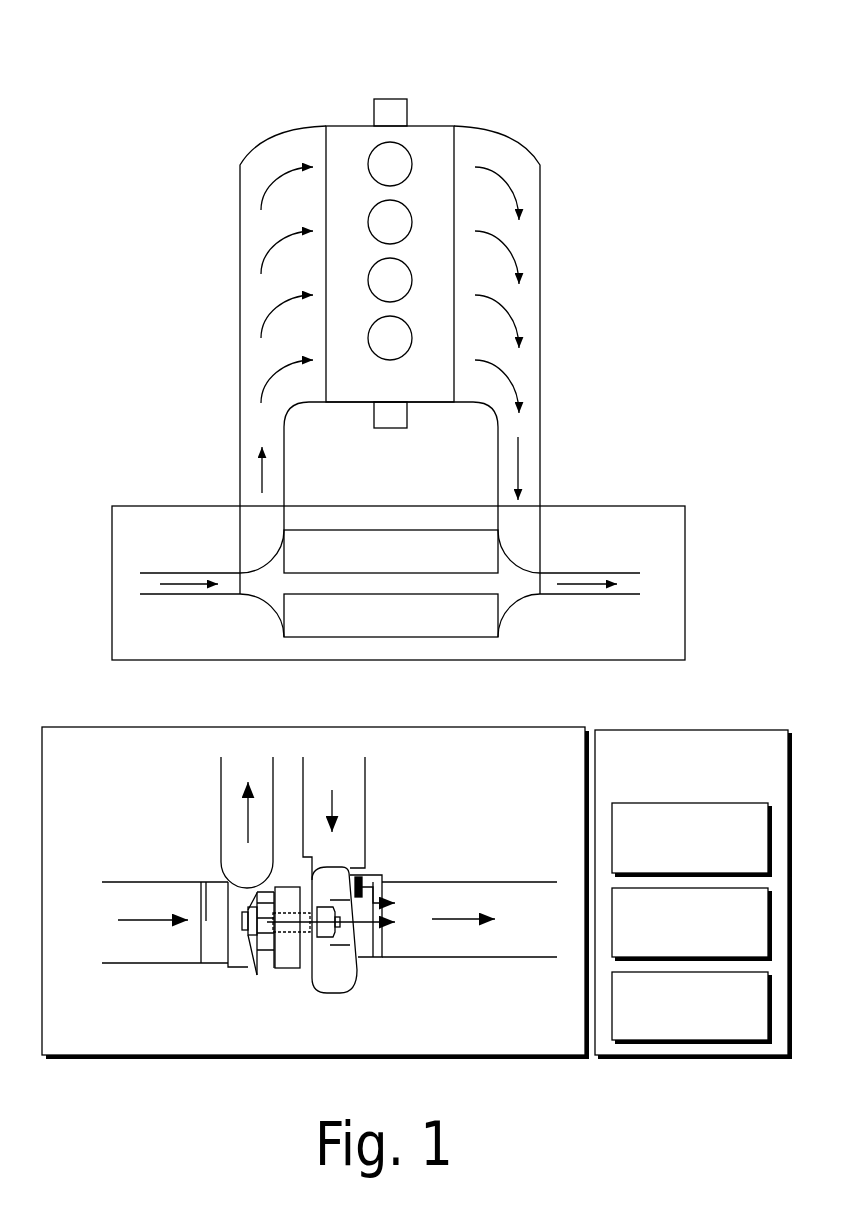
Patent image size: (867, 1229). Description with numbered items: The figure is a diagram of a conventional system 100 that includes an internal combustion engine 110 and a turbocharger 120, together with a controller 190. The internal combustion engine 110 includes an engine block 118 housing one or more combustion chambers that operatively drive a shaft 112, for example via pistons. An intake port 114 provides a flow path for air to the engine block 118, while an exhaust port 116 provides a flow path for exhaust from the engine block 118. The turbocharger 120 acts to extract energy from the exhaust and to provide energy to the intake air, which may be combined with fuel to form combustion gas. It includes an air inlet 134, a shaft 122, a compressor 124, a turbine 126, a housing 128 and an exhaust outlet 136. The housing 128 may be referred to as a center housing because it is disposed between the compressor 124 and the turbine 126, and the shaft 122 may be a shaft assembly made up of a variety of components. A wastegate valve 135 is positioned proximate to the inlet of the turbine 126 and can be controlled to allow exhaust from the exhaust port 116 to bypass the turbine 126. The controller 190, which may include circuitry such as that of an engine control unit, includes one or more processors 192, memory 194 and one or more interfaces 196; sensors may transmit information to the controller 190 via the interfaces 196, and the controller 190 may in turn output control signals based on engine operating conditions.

The system 100 is at (534, 61).
The internal combustion engine 110 is at (357, 122).
The shaft 112 is at (392, 99).
The intake port 114 is at (258, 140).
The exhaust port 116 is at (537, 152).
The engine block 118 is at (391, 452).
The turbocharger 120 is at (592, 506).
The shaft 122 is at (390, 593).
The compressor 124 is at (267, 601).
The turbine 126 is at (515, 600).
The housing 128 is at (332, 1030).
The air inlet 134 is at (208, 572).
The wastegate valve 135 is at (363, 881).
The exhaust outlet 136 is at (592, 573).
The controller 190 is at (692, 893).
The processors 192 is at (691, 839).
The memory 194 is at (691, 923).
The interfaces 196 is at (691, 1007).